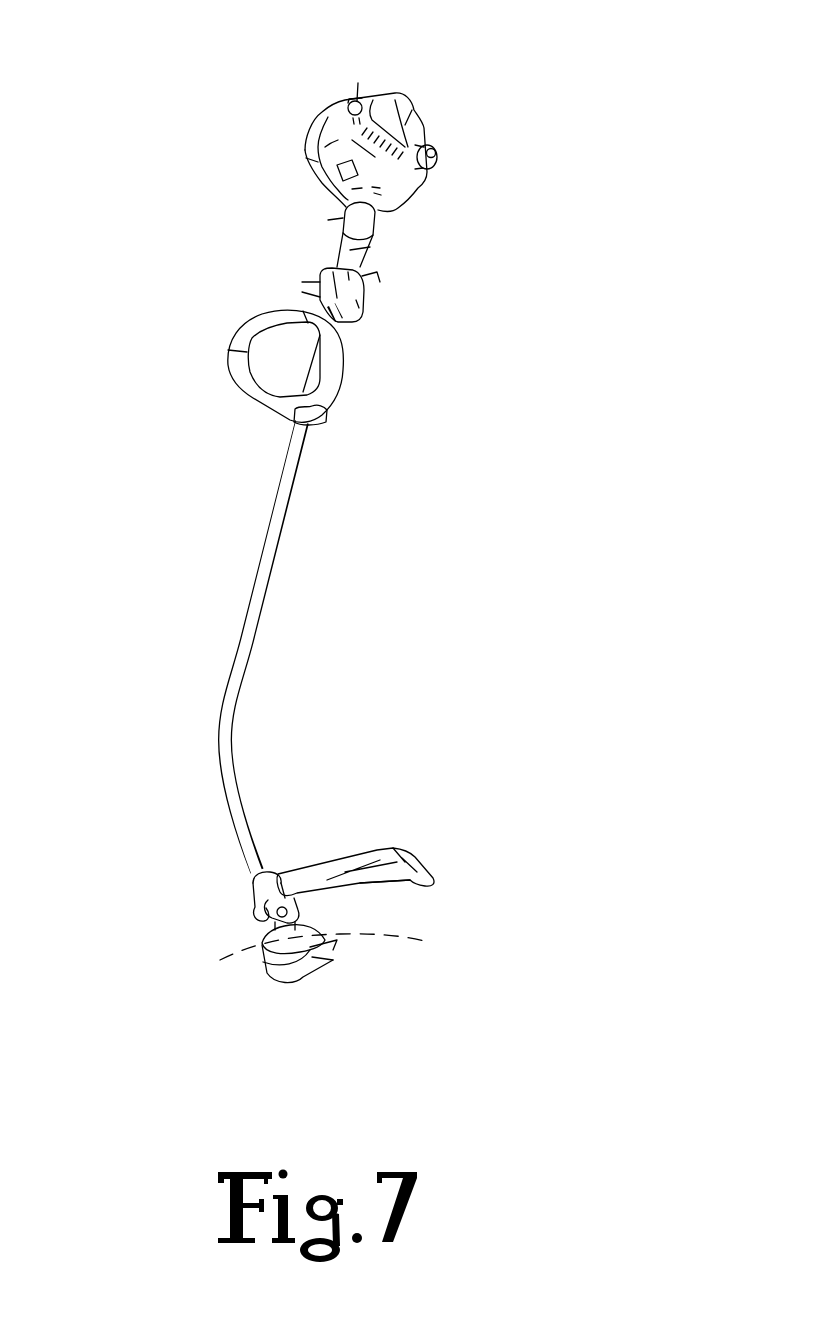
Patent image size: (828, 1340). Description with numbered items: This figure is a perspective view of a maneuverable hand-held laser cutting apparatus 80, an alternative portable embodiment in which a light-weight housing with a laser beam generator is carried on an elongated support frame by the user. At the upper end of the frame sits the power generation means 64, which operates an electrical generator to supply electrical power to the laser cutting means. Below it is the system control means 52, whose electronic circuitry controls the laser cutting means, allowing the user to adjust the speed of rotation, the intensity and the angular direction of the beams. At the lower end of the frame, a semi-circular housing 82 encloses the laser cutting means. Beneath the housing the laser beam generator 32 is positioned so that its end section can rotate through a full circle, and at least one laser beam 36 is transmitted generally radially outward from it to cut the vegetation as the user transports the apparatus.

The hand-held laser cutting apparatus 80 is at (510, 150).
The power generation means 64 is at (330, 117).
The system control means 52 is at (320, 280).
The semi-circular housing 82 is at (403, 853).
The laser beam generator 32 is at (258, 970).
The laser beam 36 is at (422, 940).